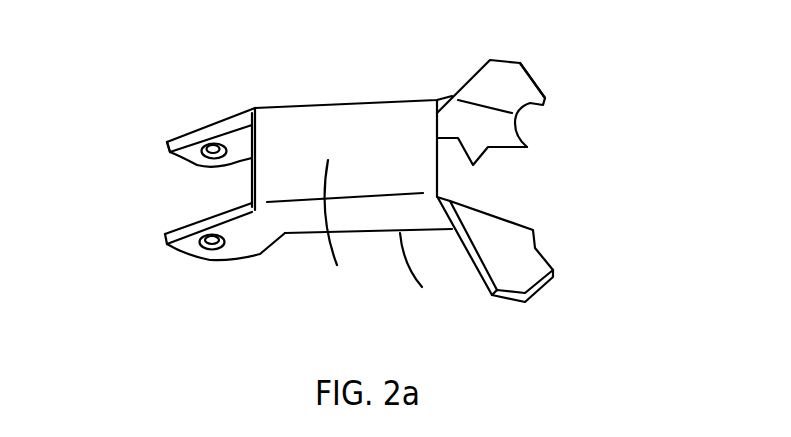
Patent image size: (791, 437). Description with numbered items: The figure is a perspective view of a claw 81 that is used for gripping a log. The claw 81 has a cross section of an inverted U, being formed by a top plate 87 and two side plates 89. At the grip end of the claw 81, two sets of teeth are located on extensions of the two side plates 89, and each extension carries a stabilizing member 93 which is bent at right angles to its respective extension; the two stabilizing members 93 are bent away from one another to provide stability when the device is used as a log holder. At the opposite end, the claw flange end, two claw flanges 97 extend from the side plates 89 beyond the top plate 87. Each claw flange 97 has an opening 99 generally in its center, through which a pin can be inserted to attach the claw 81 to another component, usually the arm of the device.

The claw 81 is at (348, 102).
The top plate 87 is at (345, 227).
The side plates 89 is at (422, 274).
The stabilizing member 93 is at (508, 62).
The claw flange 97 is at (168, 156).
The opening 99 is at (208, 250).